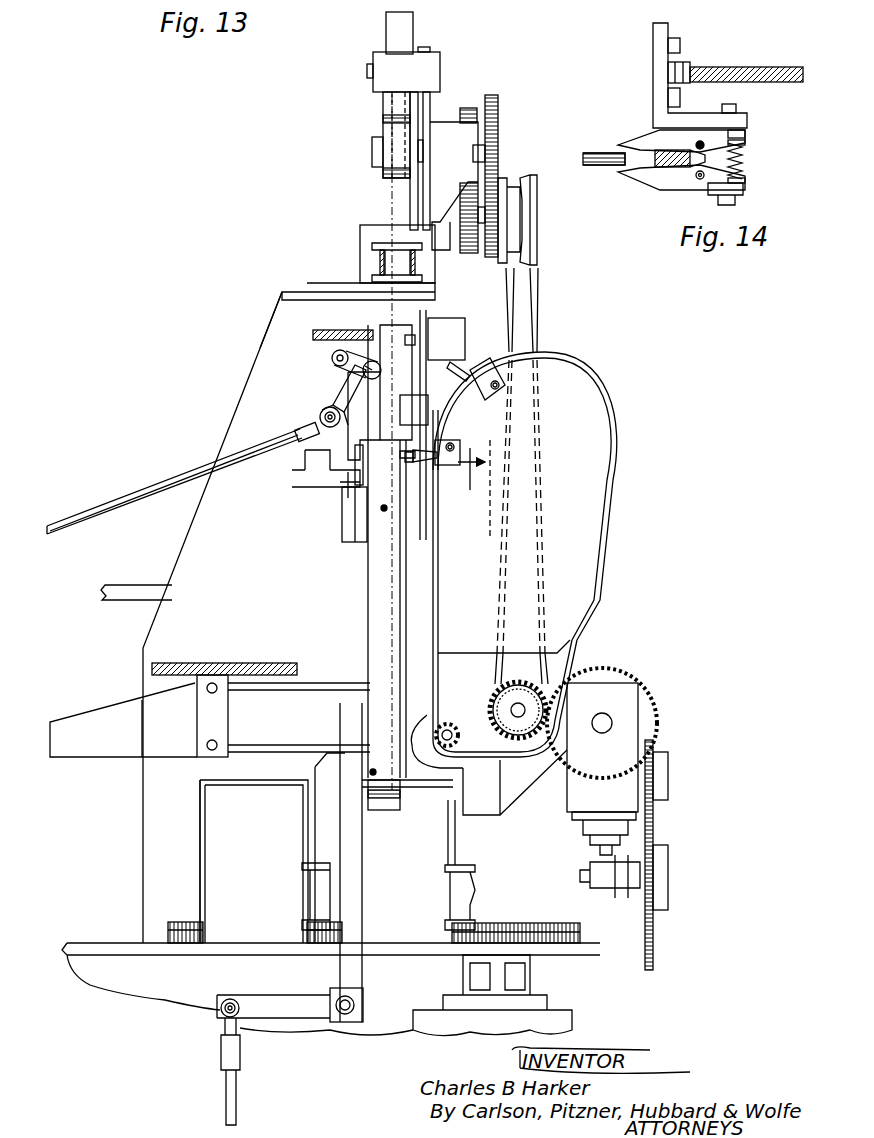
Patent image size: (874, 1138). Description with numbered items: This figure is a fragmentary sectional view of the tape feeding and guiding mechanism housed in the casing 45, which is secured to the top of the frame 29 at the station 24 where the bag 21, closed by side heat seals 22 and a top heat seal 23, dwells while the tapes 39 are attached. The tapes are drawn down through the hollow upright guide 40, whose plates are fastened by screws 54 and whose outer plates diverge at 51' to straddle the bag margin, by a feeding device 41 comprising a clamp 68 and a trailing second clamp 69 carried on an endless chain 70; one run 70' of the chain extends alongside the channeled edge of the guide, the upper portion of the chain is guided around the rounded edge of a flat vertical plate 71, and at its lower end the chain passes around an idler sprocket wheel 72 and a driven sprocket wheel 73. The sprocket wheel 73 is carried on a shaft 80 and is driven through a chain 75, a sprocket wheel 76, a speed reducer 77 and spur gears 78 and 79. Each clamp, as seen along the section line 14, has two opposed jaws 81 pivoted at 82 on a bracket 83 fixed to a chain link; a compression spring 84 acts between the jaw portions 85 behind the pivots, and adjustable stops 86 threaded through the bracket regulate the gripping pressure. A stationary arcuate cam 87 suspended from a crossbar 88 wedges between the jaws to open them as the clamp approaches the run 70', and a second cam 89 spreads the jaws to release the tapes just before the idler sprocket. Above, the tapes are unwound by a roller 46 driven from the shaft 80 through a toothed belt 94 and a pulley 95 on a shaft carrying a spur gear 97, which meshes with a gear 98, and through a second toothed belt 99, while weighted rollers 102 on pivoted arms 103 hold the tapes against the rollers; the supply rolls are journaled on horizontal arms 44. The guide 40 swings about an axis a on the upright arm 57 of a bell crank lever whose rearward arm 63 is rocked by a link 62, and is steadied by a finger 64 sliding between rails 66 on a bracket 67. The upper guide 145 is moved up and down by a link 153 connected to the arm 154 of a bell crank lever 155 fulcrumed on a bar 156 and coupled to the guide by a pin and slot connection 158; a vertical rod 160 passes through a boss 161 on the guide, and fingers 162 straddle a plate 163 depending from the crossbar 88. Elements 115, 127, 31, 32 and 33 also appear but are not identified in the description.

In FIG. 13, the weighted rollers 102 is at (413, 30).
In FIG. 13, the arms 103 is at (380, 89).
In FIG. 13, the roller 46 is at (390, 170).
In FIG. 13, the second toothed belt 99 is at (498, 155).
In FIG. 13, the gear 98 is at (468, 108).
In FIG. 13, the spur gear 97 is at (468, 253).
In FIG. 13, the pulley 95 is at (537, 231).
In FIG. 13, the toothed belt 94 is at (540, 313).
In FIG. 13, the horizontal arms 44 is at (380, 266).
In FIG. 13, the station 24 is at (278, 316).
In FIG. 13, the casing 45 is at (278, 330).
In FIG. 13, the plate 115 is at (126, 590).
In FIG. 13, the link 153 is at (120, 498).
In FIG. 13, the boss 161 is at (335, 426).
In FIG. 13, the arm 154 is at (340, 395).
In FIG. 13, the bell crank lever 155 is at (332, 375).
In FIG. 13, the bar 156 is at (332, 354).
In FIG. 13, the vertical rod 160 is at (352, 333).
In FIG. 13, the pin and slot connection 158 is at (384, 362).
In FIG. 13, the bracket 67 is at (312, 450).
In FIG. 13, the horizontal rails 66 is at (296, 480).
In FIG. 13, the finger 64 is at (348, 516).
In FIG. 13, the screws 54 is at (380, 512).
In FIG. 13, the upper guide 145 is at (386, 458).
In FIG. 14, the upper guide 145 is at (593, 168).
In FIG. 13, the hollow upright guide 40 is at (370, 613).
In FIG. 13, the plate 163 is at (428, 351).
In FIG. 13, the fingers 162 is at (426, 390).
In FIG. 13, the crossbar 88 is at (455, 330).
In FIG. 13, the second clamp 69 is at (497, 372).
In FIG. 13, the feeding device 41 is at (490, 353).
In FIG. 14, the feeding device 41 is at (636, 125).
In FIG. 13, the jaws 81 is at (452, 374).
In FIG. 14, the jaws 81 is at (635, 140).
In FIG. 13, the tapes 39 is at (410, 464).
In FIG. 14, the tapes 39 is at (608, 153).
In FIG. 13, the cam 87 is at (444, 436).
In FIG. 14, the cam 87 is at (655, 160).
In FIG. 13, the clamp 68 is at (443, 474).
In FIG. 14, the clamp 68 is at (668, 190).
In FIG. 13, the section line 14 is at (405, 481).
In FIG. 13, the flat vertical plate 71 is at (600, 512).
In FIG. 14, the flat vertical plate 71 is at (764, 67).
In FIG. 13, the endless chain 70 is at (566, 687).
In FIG. 14, the endless chain 70 is at (693, 59).
In FIG. 13, the run 70' is at (501, 583).
In FIG. 13, the second cam 89 is at (430, 716).
In FIG. 13, the driven sprocket wheel 73 is at (489, 697).
In FIG. 13, the shaft 80 is at (498, 823).
In FIG. 13, the spur gear 79 is at (520, 745).
In FIG. 13, the idler sprocket wheel 72 is at (458, 725).
In FIG. 13, the spur gear 78 is at (650, 688).
In FIG. 13, the speed reducer 77 is at (640, 712).
In FIG. 13, the sprocket wheel 76 is at (668, 780).
In FIG. 13, the chain 75 is at (653, 948).
In FIG. 13, the arm 127 is at (332, 685).
In FIG. 13, the heat seal 23 is at (278, 780).
In FIG. 13, the bag 21 is at (206, 806).
In FIG. 13, the heat seals 22 is at (202, 826).
In FIG. 13, the clamp 31 is at (312, 892).
In FIG. 13, the rack 32 is at (580, 925).
In FIG. 13, the upright arm 57 is at (356, 882).
In FIG. 13, the diverging portions of outer plates 51' is at (407, 801).
In FIG. 13, the pedestal 33 is at (572, 1020).
In FIG. 13, the frame 29 is at (157, 990).
In FIG. 13, the axis a is at (355, 1008).
In FIG. 13, the rearwardly projecting arm 63 is at (282, 996).
In FIG. 13, the link 62 is at (226, 1087).
In FIG. 14, the bracket 83 is at (705, 118).
In FIG. 14, the pivots 82 is at (698, 144).
In FIG. 14, the compression spring 84 is at (745, 158).
In FIG. 14, the jaw portions 85 is at (746, 143).
In FIG. 14, the adjustable stops 86 is at (746, 132).